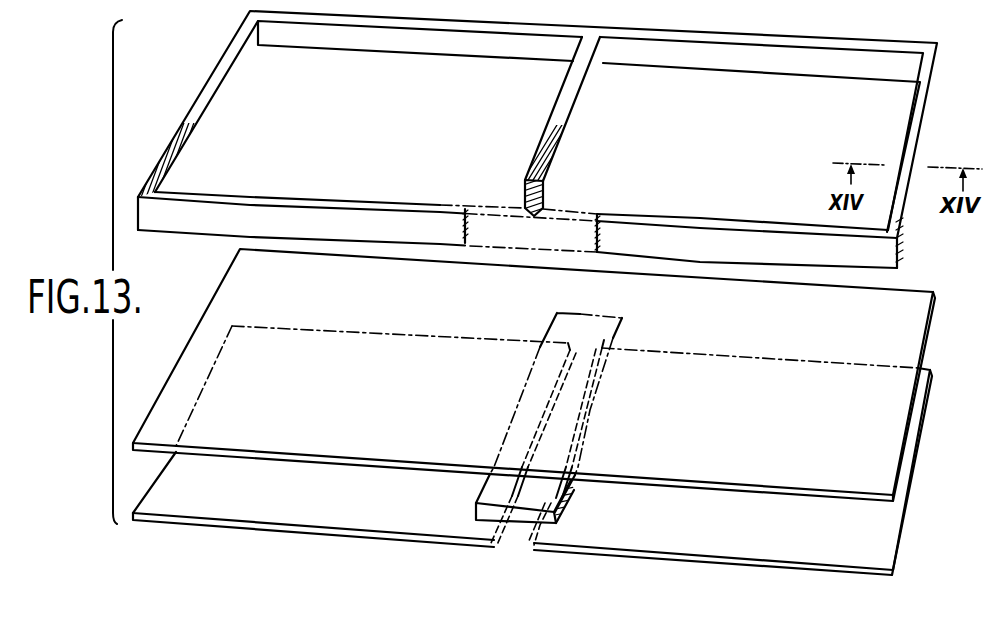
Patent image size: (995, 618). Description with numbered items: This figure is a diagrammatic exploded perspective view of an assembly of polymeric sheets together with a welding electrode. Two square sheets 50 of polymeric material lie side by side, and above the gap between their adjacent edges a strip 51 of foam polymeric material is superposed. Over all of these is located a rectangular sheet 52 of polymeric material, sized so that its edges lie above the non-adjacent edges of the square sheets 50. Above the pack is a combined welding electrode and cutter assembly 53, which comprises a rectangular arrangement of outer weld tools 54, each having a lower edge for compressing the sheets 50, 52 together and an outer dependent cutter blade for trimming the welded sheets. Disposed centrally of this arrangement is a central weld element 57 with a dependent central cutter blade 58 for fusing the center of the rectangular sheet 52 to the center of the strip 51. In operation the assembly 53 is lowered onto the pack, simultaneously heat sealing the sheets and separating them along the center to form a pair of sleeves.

The square sheets 50 is at (566, 540).
The strip 51 is at (485, 488).
The rectangular sheet 52 is at (912, 345).
The combined welding electrode and cutter assembly 53 is at (202, 75).
The outer weld tools 54 is at (193, 230).
The central weld element 57 is at (560, 97).
The central cutter blade 58 is at (541, 215).